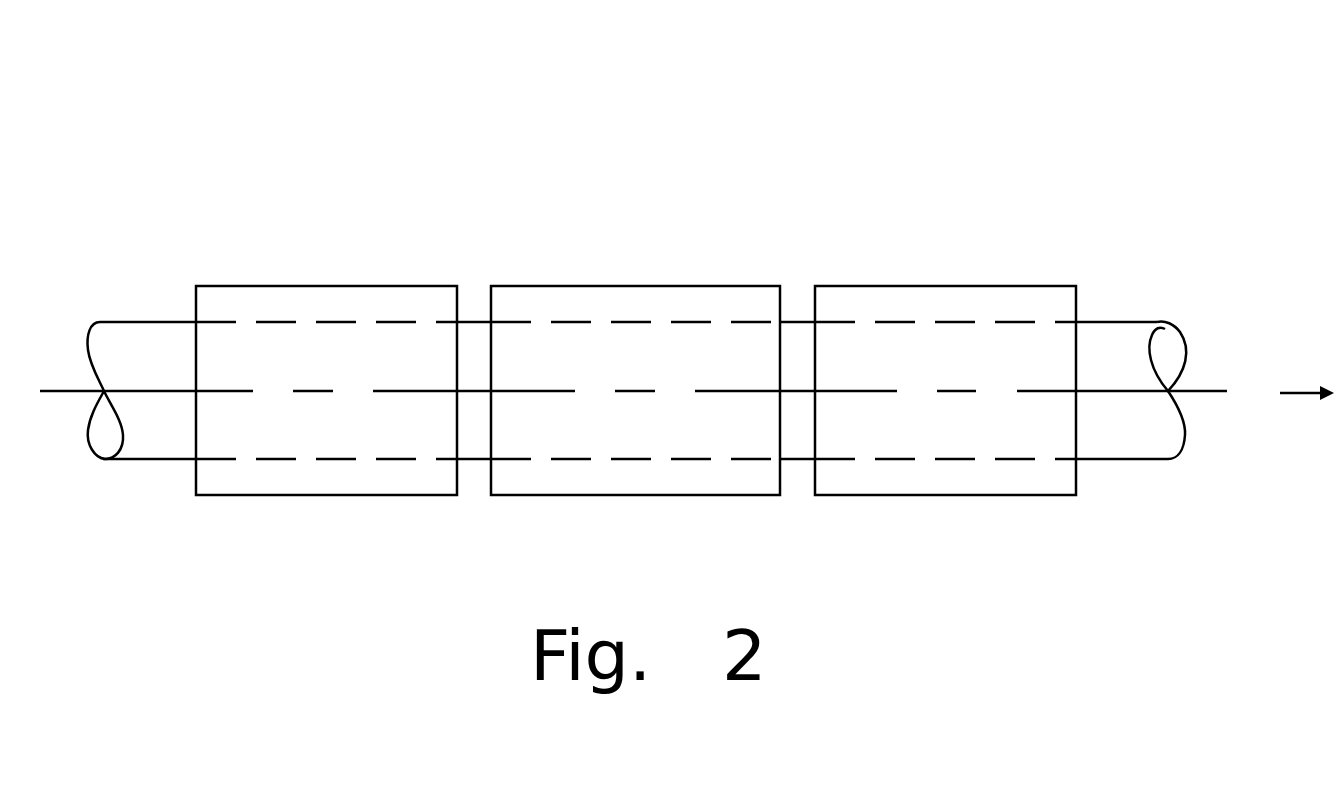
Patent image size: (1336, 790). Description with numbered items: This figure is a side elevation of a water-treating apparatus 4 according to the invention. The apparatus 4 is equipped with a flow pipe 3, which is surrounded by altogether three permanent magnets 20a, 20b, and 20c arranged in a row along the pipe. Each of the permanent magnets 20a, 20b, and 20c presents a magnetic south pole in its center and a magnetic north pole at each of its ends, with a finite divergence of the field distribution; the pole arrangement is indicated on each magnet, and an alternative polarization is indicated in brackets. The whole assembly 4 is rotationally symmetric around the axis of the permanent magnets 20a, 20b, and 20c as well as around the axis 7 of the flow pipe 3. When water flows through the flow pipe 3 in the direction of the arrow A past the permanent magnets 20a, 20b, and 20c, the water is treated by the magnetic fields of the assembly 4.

The apparatus 4 is at (1046, 140).
The flow pipe 3 is at (1120, 322).
The axis 7 is at (1206, 394).
The permanent magnet 20a is at (248, 286).
The permanent magnet 20b is at (543, 286).
The permanent magnet 20c is at (867, 286).